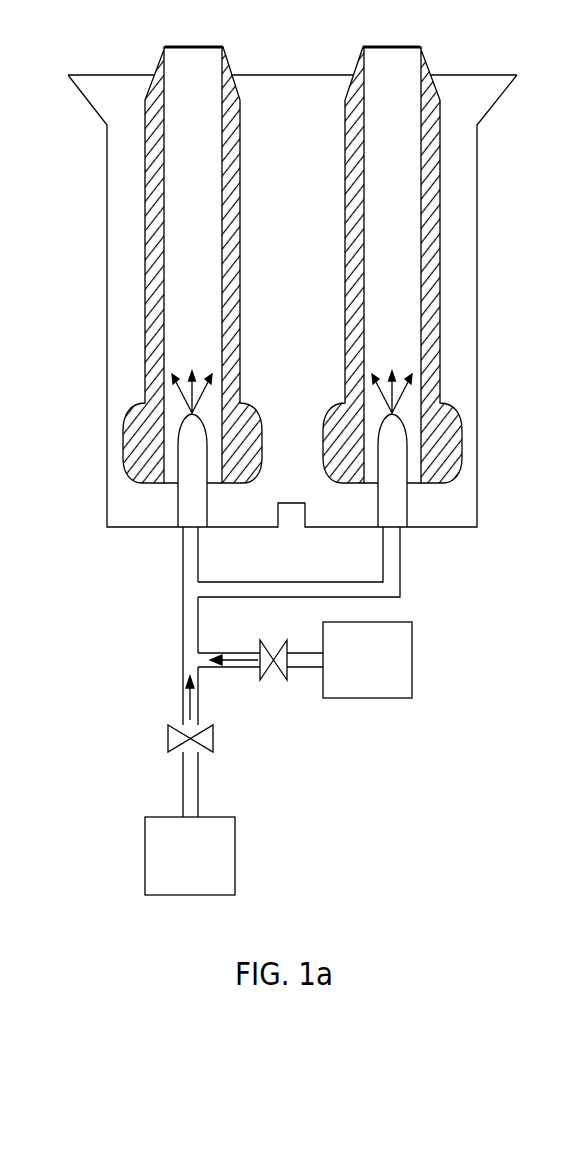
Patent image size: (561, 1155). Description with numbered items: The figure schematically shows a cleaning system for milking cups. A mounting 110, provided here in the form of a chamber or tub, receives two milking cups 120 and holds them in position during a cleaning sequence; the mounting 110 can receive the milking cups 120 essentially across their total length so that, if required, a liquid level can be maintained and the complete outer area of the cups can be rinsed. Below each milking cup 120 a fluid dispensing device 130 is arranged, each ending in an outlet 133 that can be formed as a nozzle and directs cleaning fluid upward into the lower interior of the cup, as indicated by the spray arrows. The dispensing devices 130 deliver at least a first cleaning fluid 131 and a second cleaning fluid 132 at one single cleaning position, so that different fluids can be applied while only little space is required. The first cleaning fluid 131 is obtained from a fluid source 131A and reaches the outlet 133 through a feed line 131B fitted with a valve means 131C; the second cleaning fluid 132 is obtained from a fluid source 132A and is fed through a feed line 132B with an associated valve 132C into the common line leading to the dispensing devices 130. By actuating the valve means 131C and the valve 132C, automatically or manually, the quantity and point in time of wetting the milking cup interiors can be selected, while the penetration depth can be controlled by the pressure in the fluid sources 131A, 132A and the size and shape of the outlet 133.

The mounting 110 is at (478, 160).
The milking cups 120 is at (427, 63).
The fluid dispensing device 130 is at (410, 500).
The outlet 133 is at (397, 428).
The first cleaning fluid 131 is at (186, 708).
The fluid source 131A is at (217, 869).
The feed line 131B is at (183, 773).
The valve means 131C is at (168, 740).
The second cleaning fluid 132 is at (239, 668).
The fluid source 132A is at (393, 674).
The feed line 132B is at (293, 668).
The valve 132C is at (262, 641).